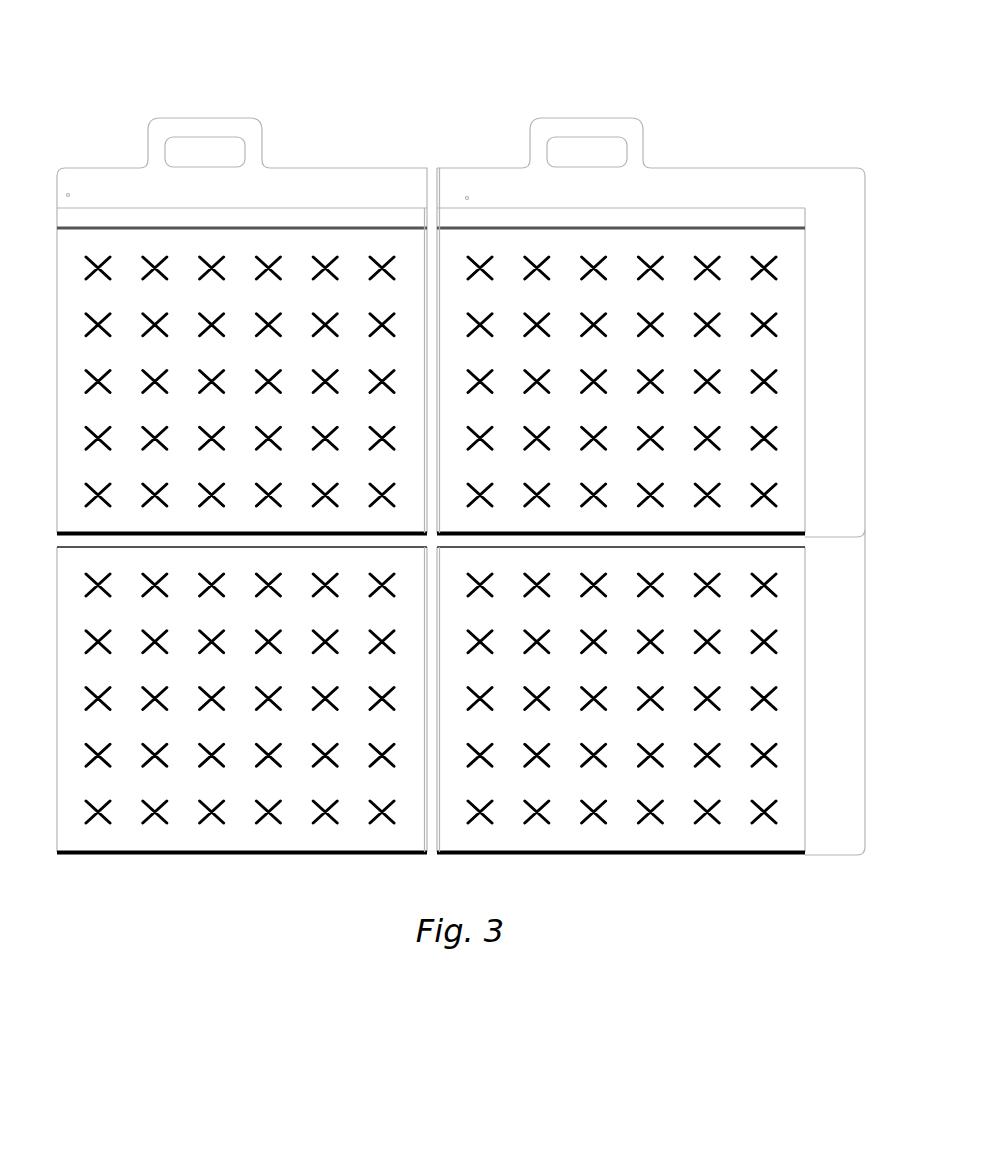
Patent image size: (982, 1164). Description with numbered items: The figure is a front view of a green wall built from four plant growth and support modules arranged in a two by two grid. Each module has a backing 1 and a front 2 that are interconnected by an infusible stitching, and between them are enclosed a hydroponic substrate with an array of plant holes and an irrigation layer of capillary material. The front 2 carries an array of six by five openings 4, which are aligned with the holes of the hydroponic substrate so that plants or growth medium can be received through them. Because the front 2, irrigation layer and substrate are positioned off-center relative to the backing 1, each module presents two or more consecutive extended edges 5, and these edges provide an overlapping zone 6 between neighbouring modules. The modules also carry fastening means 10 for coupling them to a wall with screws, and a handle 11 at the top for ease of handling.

The backing 1 is at (353, 180).
The front 2 is at (121, 838).
The openings 4 is at (98, 262).
The extended edges 5 is at (319, 192).
The overlapping zone 6 is at (87, 538).
The fastening means 10 is at (835, 200).
The handle 11 is at (221, 128).